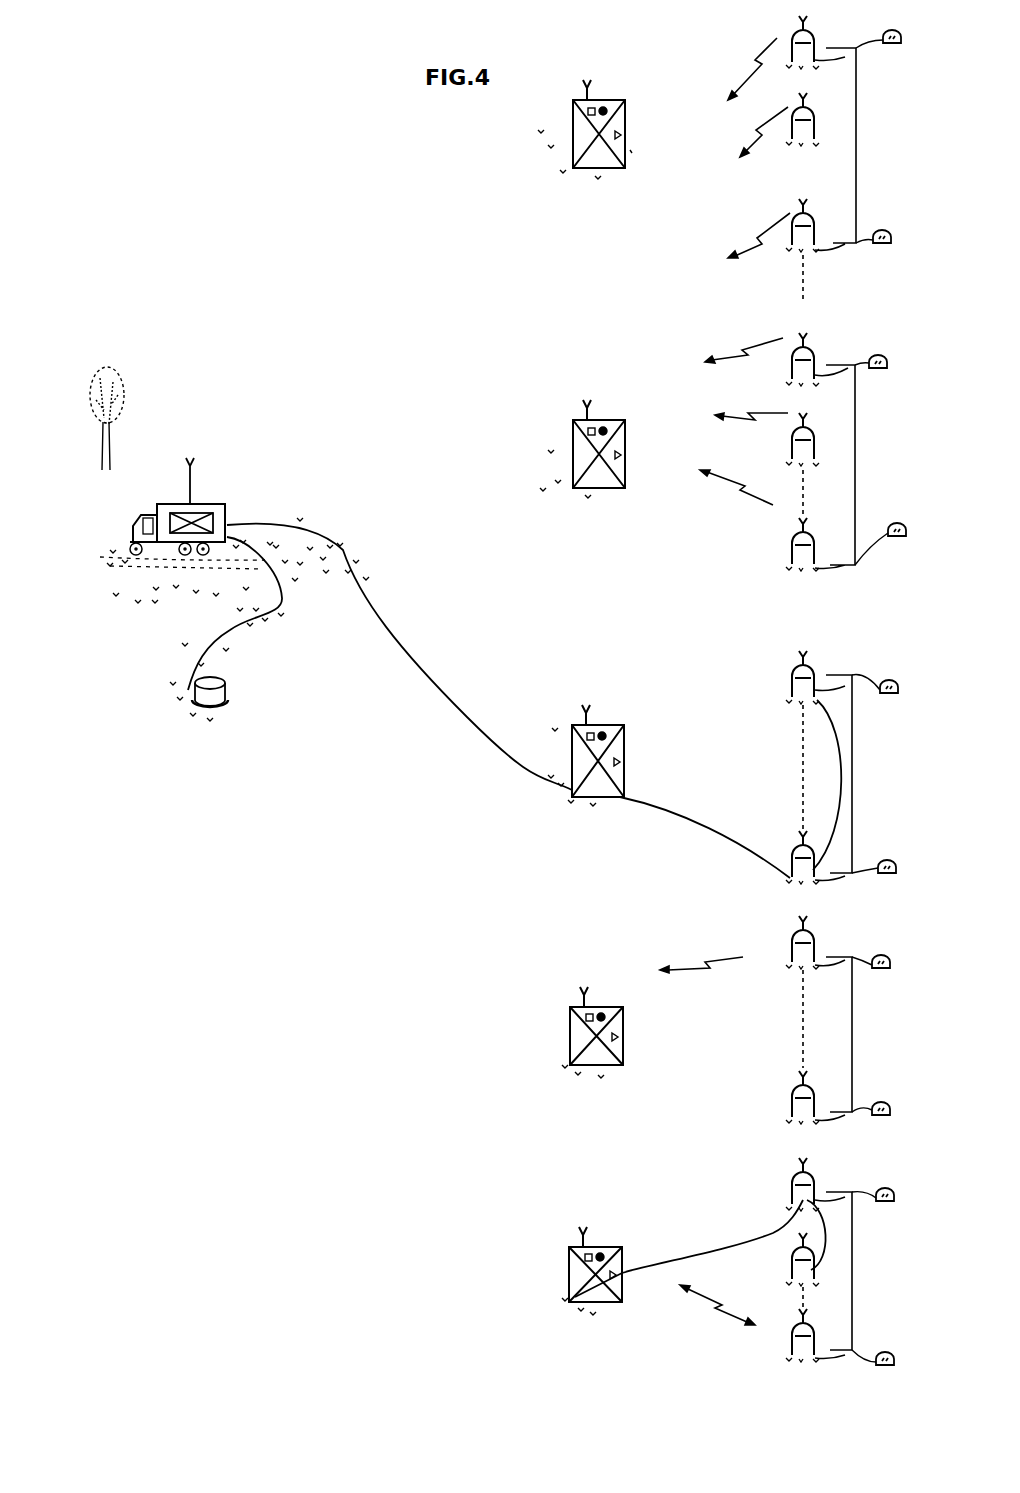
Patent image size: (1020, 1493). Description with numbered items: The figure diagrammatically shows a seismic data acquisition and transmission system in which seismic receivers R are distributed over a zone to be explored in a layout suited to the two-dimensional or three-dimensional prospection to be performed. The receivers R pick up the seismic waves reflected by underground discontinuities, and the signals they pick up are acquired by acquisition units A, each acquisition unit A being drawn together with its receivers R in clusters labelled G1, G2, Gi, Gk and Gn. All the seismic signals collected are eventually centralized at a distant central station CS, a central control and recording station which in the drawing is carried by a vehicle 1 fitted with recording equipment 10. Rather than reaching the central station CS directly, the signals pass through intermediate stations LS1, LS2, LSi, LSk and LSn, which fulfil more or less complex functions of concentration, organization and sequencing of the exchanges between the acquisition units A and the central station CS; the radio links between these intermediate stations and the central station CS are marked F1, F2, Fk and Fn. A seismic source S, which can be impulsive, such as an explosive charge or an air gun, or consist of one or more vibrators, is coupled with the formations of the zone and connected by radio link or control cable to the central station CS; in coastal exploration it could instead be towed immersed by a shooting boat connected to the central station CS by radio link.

The mobile central station vehicle 1 is at (126, 504).
The central station equipment 10 is at (207, 513).
The central station CS is at (187, 467).
The source S is at (235, 622).
The intermediate station LS1 is at (586, 122).
The intermediate station LS2 is at (587, 444).
The intermediate station LSi is at (591, 752).
The intermediate station LSk is at (601, 1031).
The intermediate station LSn is at (682, 1257).
The sensor group 1 G1 is at (810, 158).
The sensor group 2 G2 is at (797, 452).
The sensor group i Gi is at (837, 767).
The sensor group k Gk is at (776, 1020).
The sensor group n Gn is at (781, 1260).
The seismic receiver R is at (879, 697).
The acquisition unit A is at (797, 145).
The radio link frequency 1 F1 is at (338, 343).
The radio link frequency 2 F2 is at (270, 468).
The radio link frequency k Fk is at (523, 938).
The radio link frequency n Fn is at (473, 1073).